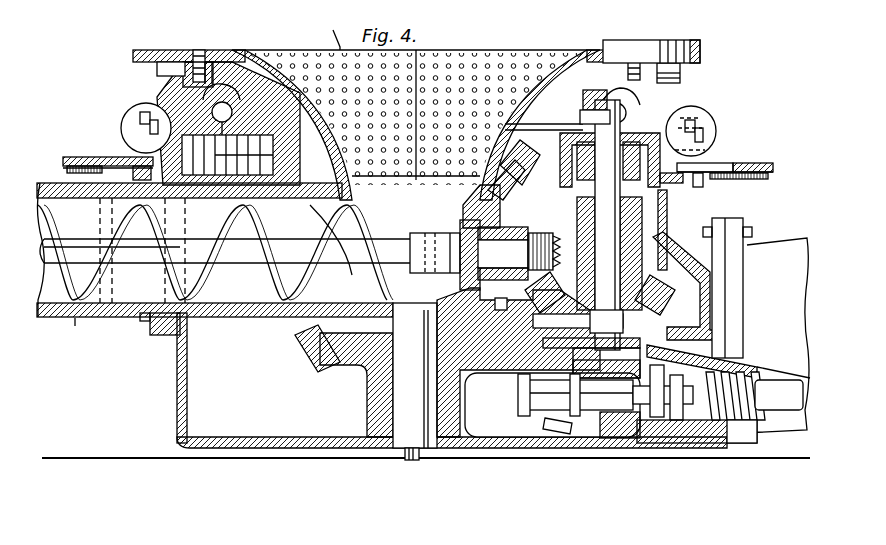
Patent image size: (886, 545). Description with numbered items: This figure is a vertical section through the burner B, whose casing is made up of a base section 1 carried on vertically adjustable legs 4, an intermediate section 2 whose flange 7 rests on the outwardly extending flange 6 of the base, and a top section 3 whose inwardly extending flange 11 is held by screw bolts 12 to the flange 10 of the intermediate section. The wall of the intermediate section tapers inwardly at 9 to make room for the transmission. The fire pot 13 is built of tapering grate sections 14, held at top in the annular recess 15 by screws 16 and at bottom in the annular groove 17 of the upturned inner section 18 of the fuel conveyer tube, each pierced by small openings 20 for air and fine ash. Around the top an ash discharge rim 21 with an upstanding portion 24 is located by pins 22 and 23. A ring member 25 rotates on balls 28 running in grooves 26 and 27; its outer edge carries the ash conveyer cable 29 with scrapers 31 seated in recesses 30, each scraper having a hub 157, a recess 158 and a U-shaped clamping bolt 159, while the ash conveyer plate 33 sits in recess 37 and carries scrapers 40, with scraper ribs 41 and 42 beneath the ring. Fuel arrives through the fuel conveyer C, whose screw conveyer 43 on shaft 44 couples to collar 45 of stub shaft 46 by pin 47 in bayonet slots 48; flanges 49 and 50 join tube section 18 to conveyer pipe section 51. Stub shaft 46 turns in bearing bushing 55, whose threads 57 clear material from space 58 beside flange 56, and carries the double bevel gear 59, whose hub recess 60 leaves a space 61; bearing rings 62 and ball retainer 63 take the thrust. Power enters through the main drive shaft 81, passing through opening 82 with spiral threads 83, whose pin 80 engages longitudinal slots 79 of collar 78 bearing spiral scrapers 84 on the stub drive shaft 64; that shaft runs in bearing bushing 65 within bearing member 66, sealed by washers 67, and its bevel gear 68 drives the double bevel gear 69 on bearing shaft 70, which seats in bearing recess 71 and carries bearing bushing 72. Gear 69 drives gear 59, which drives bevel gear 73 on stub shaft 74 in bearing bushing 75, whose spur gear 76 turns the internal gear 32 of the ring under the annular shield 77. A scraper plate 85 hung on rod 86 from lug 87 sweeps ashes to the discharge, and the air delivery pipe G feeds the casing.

The base section 1 is at (177, 420).
The intermediate section 2 is at (712, 290).
The top section 3 is at (228, 92).
The vertically adjustable legs 4 is at (410, 460).
The outwardly extending flange 6 is at (160, 335).
The flange 7 is at (150, 322).
The inwardly tapering wall 9 is at (552, 215).
The flange 10 is at (583, 125).
The inwardly extending flange 11 is at (581, 114).
The screw bolts 12 is at (586, 92).
The fire pot 13 is at (535, 60).
The grate sections 14 is at (412, 172).
The annular recess 15 is at (198, 50).
The screws 16 is at (630, 50).
The annular groove 17 is at (346, 190).
The inner section of fuel conveyer tube 18 is at (322, 204).
The small openings 20 is at (350, 150).
The ash discharge rim 21 is at (152, 50).
The spaced pins 22 is at (680, 70).
The annularly spaced pins 23 is at (682, 80).
The upstanding portion 24 is at (678, 42).
The ring member 25 is at (165, 96).
The annular groove 26 is at (190, 80).
The groove 27 is at (234, 106).
The balls 28 is at (236, 110).
The ash conveyer cable 29 is at (716, 133).
The recesses 30 is at (695, 118).
The scrapers 31 is at (705, 125).
The internal gear 32 is at (642, 104).
The ash conveyer plate 33 is at (765, 165).
The recess 37 is at (192, 230).
The scrapers 40 is at (770, 172).
The scraper rib 41 is at (700, 180).
The scraper rib 42 is at (700, 190).
The screw conveyer 43 is at (130, 223).
The shaft 44 is at (330, 264).
The collar 45 is at (412, 233).
The stub shaft 46 is at (462, 232).
The pin 47 is at (410, 245).
The bayonet slots 48 is at (412, 270).
The outwardly extending flanges 49 is at (113, 285).
The flanges 50 is at (100, 320).
The conveyer pipe section 51 is at (75, 320).
The bearing bushing 55 is at (503, 251).
The flange 56 is at (472, 215).
The threads 57 is at (478, 298).
The space 58 is at (496, 302).
The double bevel gear 59 is at (516, 165).
The recess 60 is at (522, 185).
The space 61 is at (503, 264).
The bearing rings 62 is at (530, 300).
The ball retainer 63 is at (488, 226).
The stub drive shaft 64 is at (518, 400).
The bearing bushing 65 is at (606, 440).
The bearing member 66 is at (630, 440).
The washers 67 is at (665, 440).
The bevel gear 68 is at (543, 426).
The double bevel gear 69 is at (305, 372).
The bearing shaft 70 is at (400, 415).
The bearing recess 71 is at (400, 318).
The bearing bushing 72 is at (380, 395).
The bevel gear 73 is at (702, 283).
The stub shaft 74 is at (590, 257).
The bearing bushing 75 is at (607, 225).
The spur gear 76 is at (566, 160).
The annular shield 77 is at (667, 213).
The collar 78 is at (694, 331).
The longitudinal slots 79 is at (668, 418).
The pin 80 is at (702, 425).
The main drive shaft 81 is at (788, 376).
The opening 82 is at (760, 442).
The spiral threads 83 is at (758, 366).
The spiral scrapers 84 is at (712, 360).
The scraper plate 85 is at (578, 412).
The rod 86 is at (628, 350).
The lug 87 is at (590, 320).
The hub 157 is at (706, 150).
The recess 158 is at (702, 118).
The U-shaped clamping bolt 159 is at (705, 128).
The burner B is at (325, 37).
The fuel conveyer C is at (44, 264).
The air delivery pipe G is at (776, 324).